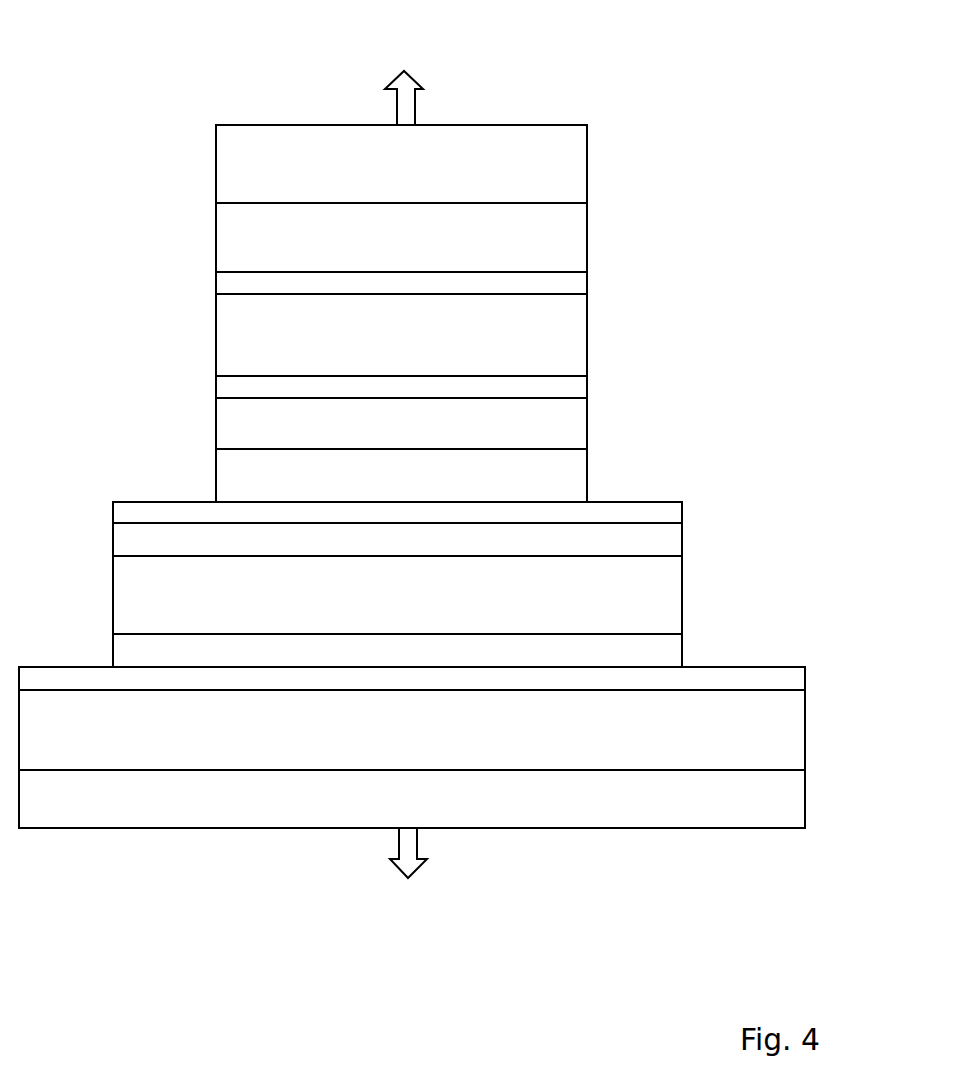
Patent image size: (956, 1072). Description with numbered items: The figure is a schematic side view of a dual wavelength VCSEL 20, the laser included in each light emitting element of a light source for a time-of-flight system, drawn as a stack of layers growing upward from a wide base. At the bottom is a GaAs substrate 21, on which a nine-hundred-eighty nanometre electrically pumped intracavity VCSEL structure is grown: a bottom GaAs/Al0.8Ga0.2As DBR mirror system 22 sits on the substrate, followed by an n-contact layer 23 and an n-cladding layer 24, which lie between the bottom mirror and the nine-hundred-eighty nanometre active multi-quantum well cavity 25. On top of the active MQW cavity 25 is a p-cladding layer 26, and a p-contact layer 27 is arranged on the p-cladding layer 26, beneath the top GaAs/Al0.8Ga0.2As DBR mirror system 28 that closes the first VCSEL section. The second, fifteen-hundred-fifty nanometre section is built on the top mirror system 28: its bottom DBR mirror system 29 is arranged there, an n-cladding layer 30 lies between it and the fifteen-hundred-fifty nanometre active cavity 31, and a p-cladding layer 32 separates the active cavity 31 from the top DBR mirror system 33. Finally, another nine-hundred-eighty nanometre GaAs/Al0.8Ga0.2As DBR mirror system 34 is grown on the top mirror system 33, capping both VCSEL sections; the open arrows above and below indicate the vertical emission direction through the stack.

The dual wavelength VCSEL 20 is at (303, 60).
The GaAs substrate 21 is at (814, 784).
The bottom GaAs/Al0.8Ga0.2As DBR mirror system 22 is at (814, 722).
The n-contact layer 23 is at (814, 677).
The n-cladding layer 24 is at (691, 648).
The 980 nm active multi-quantum well cavity 25 is at (691, 596).
The p-cladding layer 26 is at (691, 541).
The p-contact layer 27 is at (691, 510).
The top GaAs/Al0.8Ga0.2As DBR mirror system 28 is at (596, 474).
The bottom DBR mirror system 29 is at (596, 420).
The n-cladding layer 30 is at (596, 387).
The 1550 nm active cavity 31 is at (596, 332).
The p-cladding layer 32 is at (596, 283).
The top DBR mirror system 33 is at (596, 235).
The 980 nm GaAs/Al0.8Ga0.2As DBR mirror system 34 is at (596, 160).